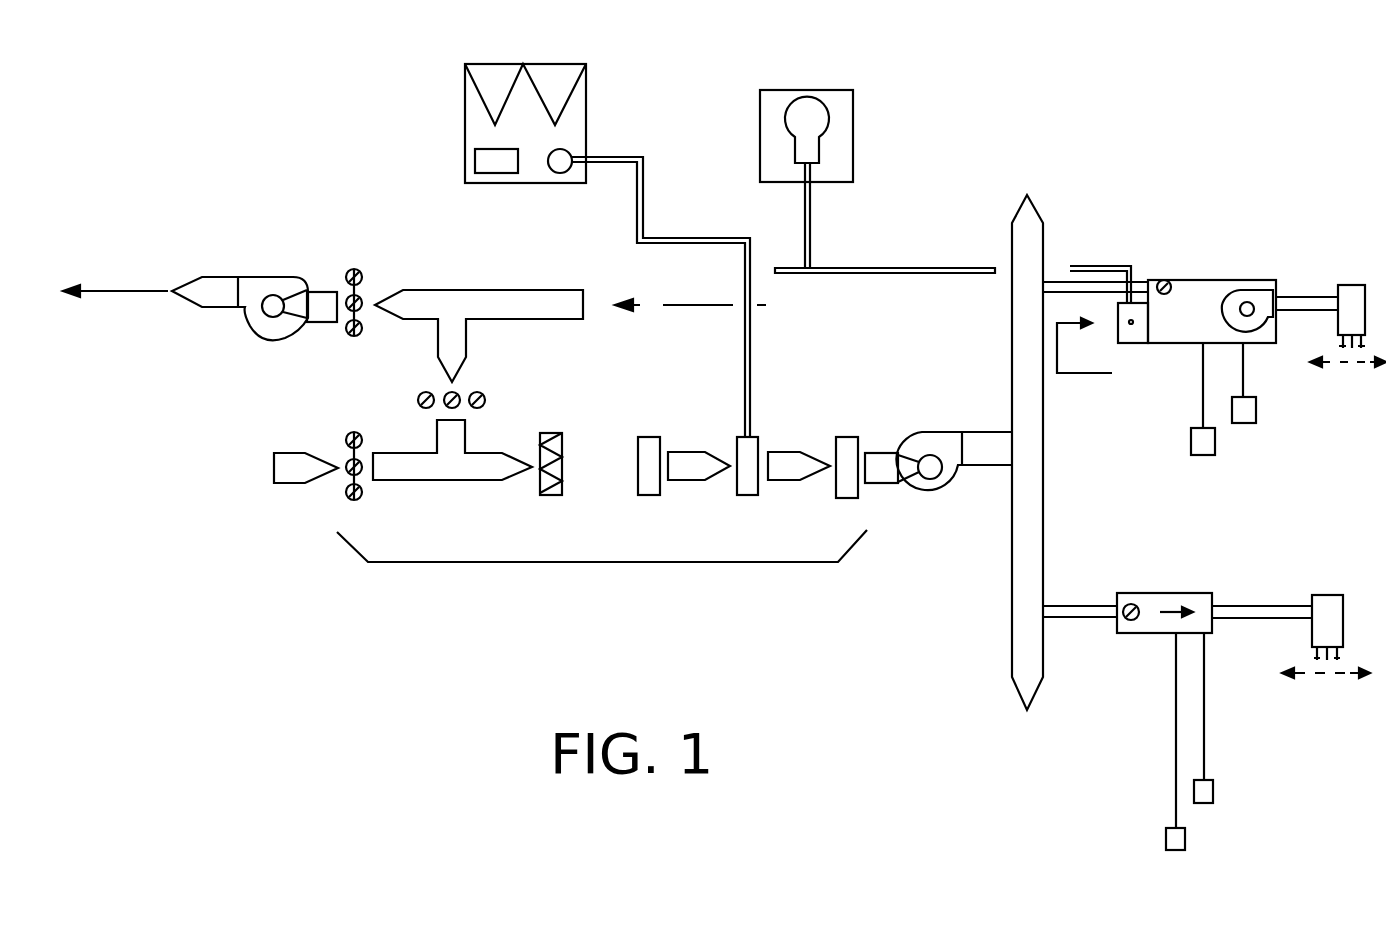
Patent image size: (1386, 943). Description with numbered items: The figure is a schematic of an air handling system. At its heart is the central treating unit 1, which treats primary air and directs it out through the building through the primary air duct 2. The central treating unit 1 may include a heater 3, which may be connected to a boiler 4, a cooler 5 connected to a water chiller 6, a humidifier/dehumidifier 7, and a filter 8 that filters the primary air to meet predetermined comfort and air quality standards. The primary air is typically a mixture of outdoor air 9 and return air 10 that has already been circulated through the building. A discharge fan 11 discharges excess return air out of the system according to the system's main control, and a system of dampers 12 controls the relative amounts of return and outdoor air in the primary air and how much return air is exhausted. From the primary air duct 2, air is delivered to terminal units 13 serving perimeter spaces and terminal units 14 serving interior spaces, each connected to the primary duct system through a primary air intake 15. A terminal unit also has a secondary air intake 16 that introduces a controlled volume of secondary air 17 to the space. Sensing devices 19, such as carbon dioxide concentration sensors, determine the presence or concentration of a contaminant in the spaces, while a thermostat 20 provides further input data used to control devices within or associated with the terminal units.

The central treating unit 1 is at (648, 562).
The primary air duct 2 is at (1012, 555).
The heater 3 is at (641, 496).
The boiler 4 is at (853, 118).
The cooler 5 is at (745, 496).
The water chiller 6 is at (465, 108).
The humidifier/dehumidifier 7 is at (841, 496).
The filter 8 is at (548, 495).
The outdoor air 9 is at (235, 467).
The return air 10 is at (709, 306).
The discharge fan 11 is at (260, 277).
The dampers 12 is at (400, 400).
The terminal units 13 is at (1213, 243).
The terminal units 14 is at (1180, 558).
The primary air intake 15 is at (1141, 280).
The secondary air intake 16 is at (1150, 345).
The secondary air 17 is at (1105, 354).
The sensing devices 19 is at (1257, 410).
The thermostat 20 is at (1215, 440).